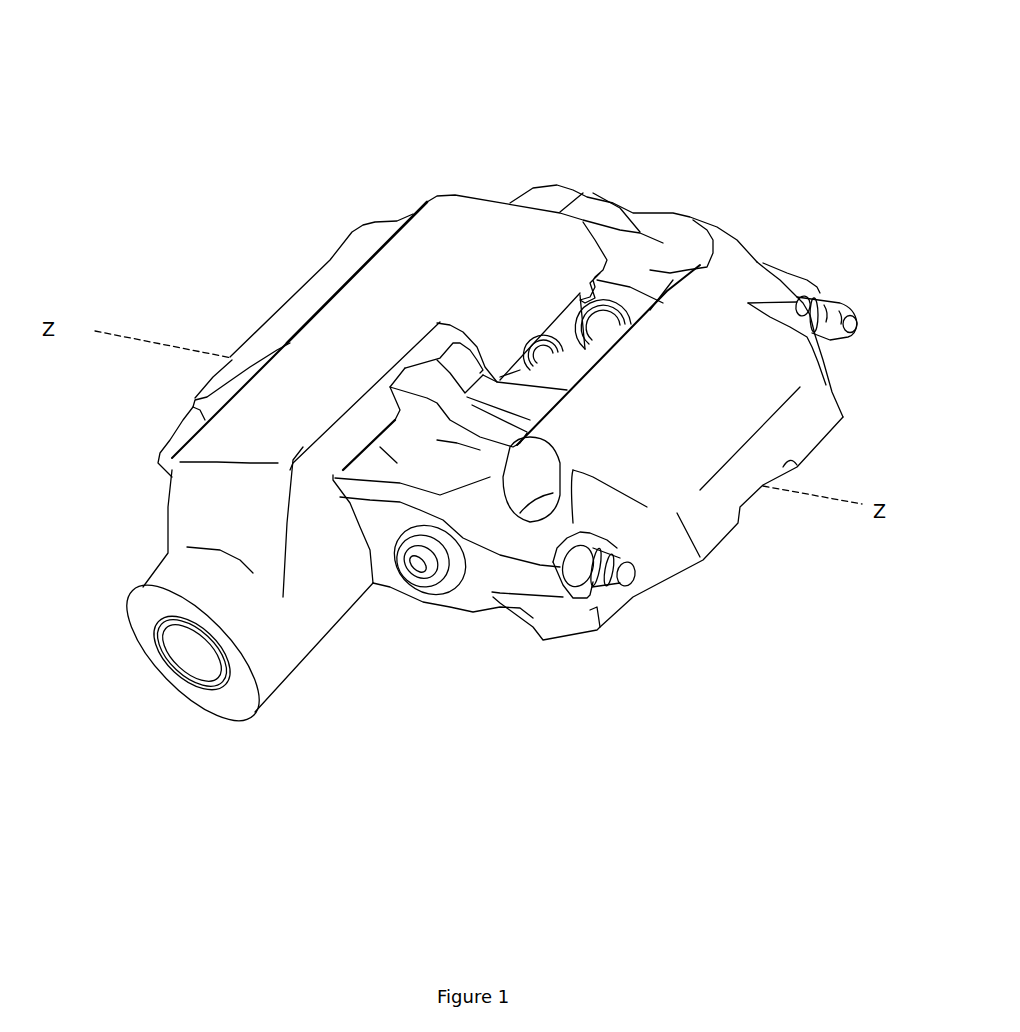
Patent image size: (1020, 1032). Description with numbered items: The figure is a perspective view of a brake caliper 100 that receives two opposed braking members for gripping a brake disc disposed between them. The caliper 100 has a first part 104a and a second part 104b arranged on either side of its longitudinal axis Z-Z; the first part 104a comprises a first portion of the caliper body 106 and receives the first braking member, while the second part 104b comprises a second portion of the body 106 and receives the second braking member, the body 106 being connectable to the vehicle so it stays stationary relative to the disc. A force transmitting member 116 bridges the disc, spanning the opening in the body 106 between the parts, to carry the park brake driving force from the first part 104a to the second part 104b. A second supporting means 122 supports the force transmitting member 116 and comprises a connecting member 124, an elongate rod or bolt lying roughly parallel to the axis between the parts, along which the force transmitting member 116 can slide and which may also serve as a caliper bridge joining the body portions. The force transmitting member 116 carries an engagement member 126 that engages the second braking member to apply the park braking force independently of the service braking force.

The brake caliper 100 is at (208, 183).
The first part 104a is at (752, 573).
The second part 104b is at (840, 453).
The caliper body 106 is at (740, 243).
The force transmitting member 116 is at (338, 293).
The second supporting means 122 is at (570, 263).
The connecting member 124 is at (444, 358).
The engagement member 126 is at (607, 278).